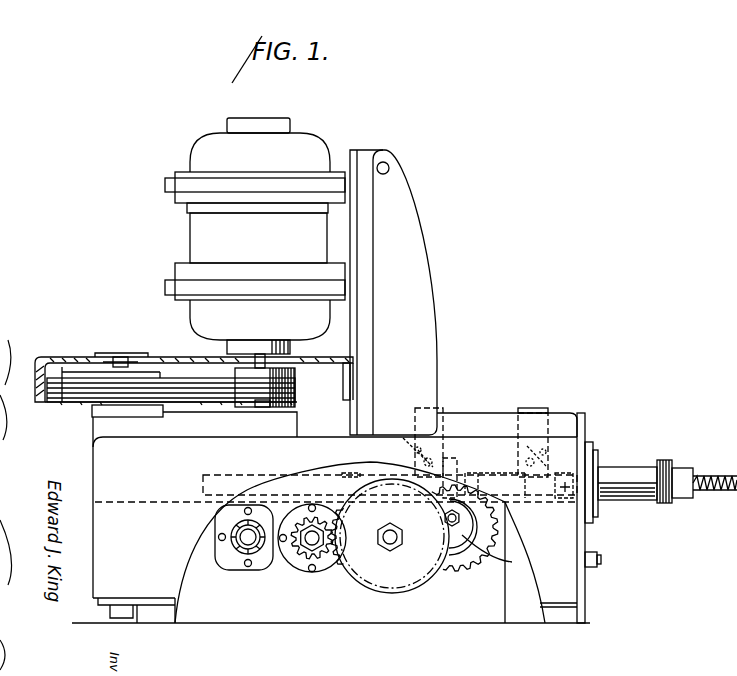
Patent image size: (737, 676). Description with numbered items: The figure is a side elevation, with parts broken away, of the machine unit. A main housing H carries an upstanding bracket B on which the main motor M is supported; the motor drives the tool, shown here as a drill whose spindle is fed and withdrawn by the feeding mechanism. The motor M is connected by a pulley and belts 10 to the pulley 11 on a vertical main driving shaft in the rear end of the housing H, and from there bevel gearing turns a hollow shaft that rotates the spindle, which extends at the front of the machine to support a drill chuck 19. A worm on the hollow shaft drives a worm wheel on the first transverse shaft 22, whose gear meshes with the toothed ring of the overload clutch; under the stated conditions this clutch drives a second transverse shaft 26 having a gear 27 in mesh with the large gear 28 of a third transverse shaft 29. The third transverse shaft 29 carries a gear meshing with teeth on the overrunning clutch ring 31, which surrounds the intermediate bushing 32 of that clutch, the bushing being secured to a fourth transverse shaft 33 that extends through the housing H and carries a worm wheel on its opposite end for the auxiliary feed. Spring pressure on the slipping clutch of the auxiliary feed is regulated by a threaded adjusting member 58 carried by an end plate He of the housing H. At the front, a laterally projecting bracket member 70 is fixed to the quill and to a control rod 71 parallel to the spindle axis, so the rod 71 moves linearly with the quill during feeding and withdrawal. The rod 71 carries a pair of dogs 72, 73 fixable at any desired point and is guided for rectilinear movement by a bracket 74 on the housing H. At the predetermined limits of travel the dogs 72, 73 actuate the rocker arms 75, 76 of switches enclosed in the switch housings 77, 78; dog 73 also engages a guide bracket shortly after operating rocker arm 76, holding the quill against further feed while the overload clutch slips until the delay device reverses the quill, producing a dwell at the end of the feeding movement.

The main motor M is at (200, 236).
The upstanding bracket B is at (438, 304).
The main housing H is at (92, 436).
The end plate He is at (585, 422).
The pulley and belts 10 is at (185, 392).
The pulley 11 is at (92, 372).
The drill chuck 19 is at (677, 470).
The first transverse shaft 22 is at (248, 540).
The second transverse shaft 26 is at (313, 548).
The gear 27 is at (308, 542).
The large gear 28 is at (361, 578).
The third transverse shaft 29 is at (391, 551).
The overrunning clutch ring 31 is at (466, 560).
The intermediate bushing 32 is at (496, 559).
The fourth transverse shaft 33 is at (446, 519).
The threaded adjusting member 58 is at (601, 559).
The bracket member 70 is at (601, 453).
The control rod 71 is at (560, 502).
The dog 72 is at (455, 469).
The dog 73 is at (468, 467).
The bracket 74 is at (345, 475).
The rocker arm 75 is at (410, 443).
The rocker arm 76 is at (533, 445).
The switch housing 77 is at (418, 400).
The switch housing 78 is at (533, 408).